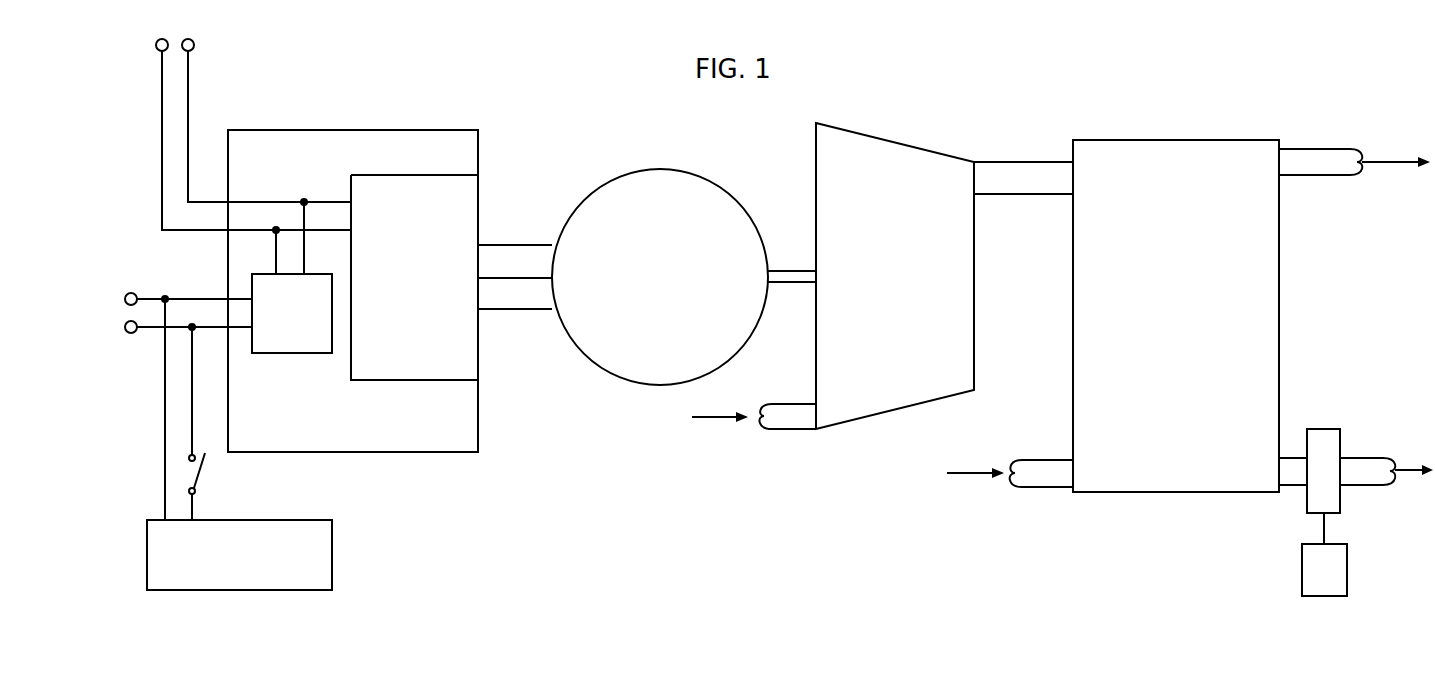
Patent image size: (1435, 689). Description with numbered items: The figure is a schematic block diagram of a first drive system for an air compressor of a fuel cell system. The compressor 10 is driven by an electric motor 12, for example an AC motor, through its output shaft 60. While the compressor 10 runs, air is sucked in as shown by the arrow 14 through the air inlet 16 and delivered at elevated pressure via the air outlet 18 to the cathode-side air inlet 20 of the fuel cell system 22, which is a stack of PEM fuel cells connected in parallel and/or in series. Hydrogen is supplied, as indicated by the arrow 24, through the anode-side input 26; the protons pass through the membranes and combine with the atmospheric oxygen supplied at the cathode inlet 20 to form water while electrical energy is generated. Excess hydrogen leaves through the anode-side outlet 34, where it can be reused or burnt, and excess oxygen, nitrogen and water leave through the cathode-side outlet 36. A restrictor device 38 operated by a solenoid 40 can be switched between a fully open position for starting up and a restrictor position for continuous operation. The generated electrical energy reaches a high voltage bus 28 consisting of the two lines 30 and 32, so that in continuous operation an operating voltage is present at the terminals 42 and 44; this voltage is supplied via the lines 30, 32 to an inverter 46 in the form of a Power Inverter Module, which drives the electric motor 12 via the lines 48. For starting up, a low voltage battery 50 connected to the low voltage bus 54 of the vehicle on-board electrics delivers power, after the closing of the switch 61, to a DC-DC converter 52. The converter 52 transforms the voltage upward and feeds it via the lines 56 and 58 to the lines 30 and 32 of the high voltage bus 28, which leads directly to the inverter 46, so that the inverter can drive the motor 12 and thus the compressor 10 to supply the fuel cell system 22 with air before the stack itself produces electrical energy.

The compressor 10 is at (865, 390).
The electric motor 12 is at (605, 345).
The arrow 14 is at (700, 418).
The air inlet 16 is at (793, 420).
The air outlet 18 is at (985, 175).
The air inlet 20 is at (1068, 172).
The fuel cell system 22 is at (1140, 472).
The arrow 24 is at (955, 474).
The input 26 is at (1040, 478).
The high voltage bus 28 is at (204, 71).
The line 30 is at (162, 98).
The line 32 is at (190, 98).
The outlet 34 is at (1328, 160).
The outlet 36 is at (1370, 478).
The restrictor device 38 is at (1315, 498).
The solenoid 40 is at (1315, 572).
The terminal 42 is at (156, 42).
The terminal 44 is at (194, 42).
The inverter 46 is at (432, 187).
The lines 48 is at (512, 310).
The low voltage battery 50 is at (245, 565).
The DC-DC converter 52 is at (288, 335).
The low voltage bus 54 is at (150, 333).
The line 56 is at (276, 258).
The line 58 is at (304, 250).
The output shaft 60 is at (785, 283).
The switch 61 is at (203, 476).